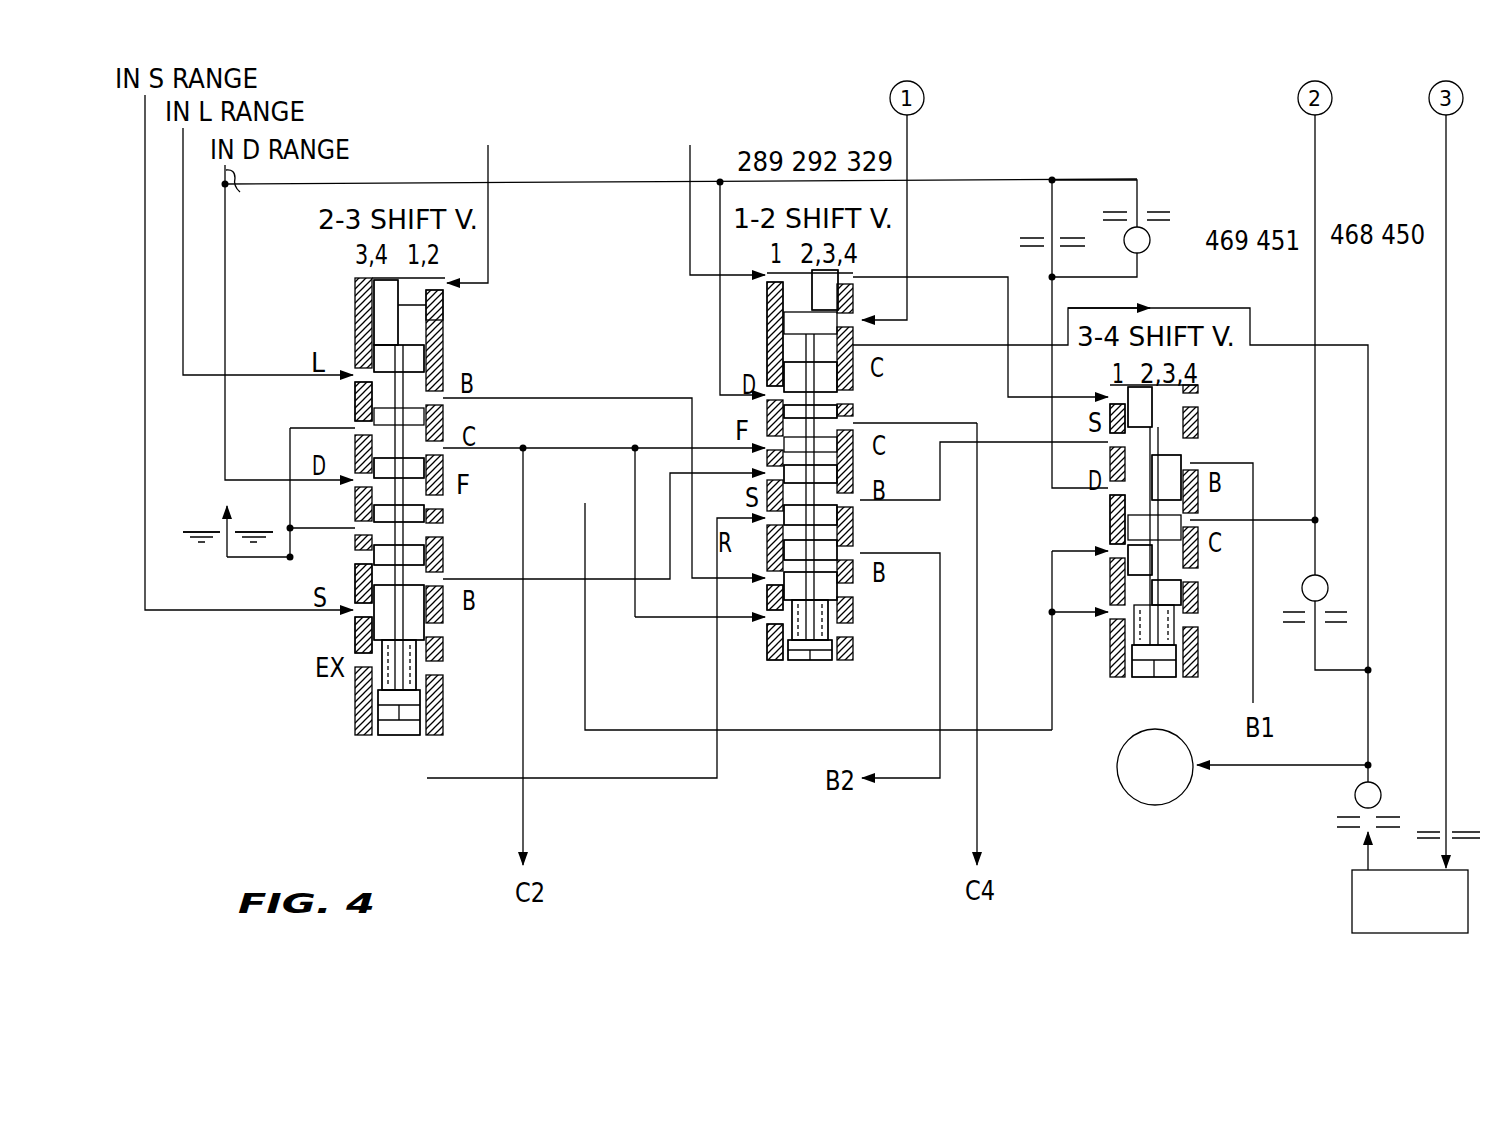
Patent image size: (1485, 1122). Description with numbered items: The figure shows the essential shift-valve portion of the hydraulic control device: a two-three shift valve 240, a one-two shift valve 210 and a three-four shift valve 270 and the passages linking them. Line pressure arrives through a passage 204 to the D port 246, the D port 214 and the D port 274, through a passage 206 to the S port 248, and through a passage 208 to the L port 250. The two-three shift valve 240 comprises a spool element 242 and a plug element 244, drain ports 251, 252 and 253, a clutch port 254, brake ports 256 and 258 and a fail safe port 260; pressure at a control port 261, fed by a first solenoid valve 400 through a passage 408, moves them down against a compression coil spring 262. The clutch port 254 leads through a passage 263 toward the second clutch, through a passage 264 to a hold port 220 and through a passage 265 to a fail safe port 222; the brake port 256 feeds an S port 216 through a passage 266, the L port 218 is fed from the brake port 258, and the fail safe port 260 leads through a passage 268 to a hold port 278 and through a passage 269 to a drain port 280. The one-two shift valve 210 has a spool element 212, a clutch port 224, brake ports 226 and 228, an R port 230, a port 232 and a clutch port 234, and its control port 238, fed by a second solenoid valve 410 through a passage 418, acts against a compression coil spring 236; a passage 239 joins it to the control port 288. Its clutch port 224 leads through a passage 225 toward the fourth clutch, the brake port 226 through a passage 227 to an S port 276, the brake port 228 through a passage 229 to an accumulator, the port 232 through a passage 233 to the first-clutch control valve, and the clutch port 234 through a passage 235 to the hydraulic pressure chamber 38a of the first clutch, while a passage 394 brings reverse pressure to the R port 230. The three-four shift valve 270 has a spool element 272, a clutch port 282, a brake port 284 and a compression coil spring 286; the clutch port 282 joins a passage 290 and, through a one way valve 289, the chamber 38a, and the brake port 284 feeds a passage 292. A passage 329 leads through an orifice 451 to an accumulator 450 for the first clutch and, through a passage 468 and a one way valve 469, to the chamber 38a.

The passage 204 is at (289, 322).
The passage 206 is at (144, 257).
The passage 208 is at (183, 272).
The 1-2 shift valve 210 is at (862, 650).
The spool element 212 is at (855, 397).
The D port 214 is at (773, 370).
The S port 216 is at (762, 478).
The L port 218 is at (753, 600).
The hold port 220 is at (755, 651).
The fail safe port 222 is at (772, 428).
The clutch port 224 is at (866, 442).
The passage 225 is at (980, 802).
The brake port 226 is at (855, 518).
The passage 227 is at (942, 468).
The brake port 228 is at (856, 568).
The passage 229 is at (897, 790).
The R port 230 is at (770, 517).
The port 232 is at (860, 302).
The passage 233 is at (908, 152).
The clutch port 234 is at (858, 350).
The passage 235 is at (1207, 308).
The compression coil spring 236 is at (855, 630).
The control port 238 is at (754, 334).
The passage 239 is at (975, 277).
The 2-3 shift valve 240 is at (352, 715).
The spool element 242 is at (438, 553).
The plug element 244 is at (432, 345).
The D port 246 is at (358, 488).
The S port 248 is at (357, 618).
The L port 250 is at (356, 360).
The drain port 251 is at (356, 565).
The drain port 252 is at (356, 408).
The drain port 253 is at (356, 514).
The clutch port 254 is at (523, 464).
The brake port 256 is at (445, 598).
The brake port 258 is at (445, 412).
The fail safe port 260 is at (438, 530).
The control port 261 is at (442, 303).
The compression coil spring 262 is at (447, 670).
The passage 263 is at (524, 760).
The passage 264 is at (694, 622).
The passage 265 is at (672, 432).
The passage 266 is at (646, 579).
The passage 268 is at (764, 731).
The passage 269 is at (1062, 553).
The 3-4 shift valve 270 is at (1195, 668).
The spool element 272 is at (1170, 425).
The D port 274 is at (1107, 498).
The S port 276 is at (1107, 446).
The hold port 278 is at (1081, 636).
The drain port 280 is at (1080, 574).
The clutch port 282 is at (1186, 568).
The brake port 284 is at (1190, 452).
The compression coil spring 286 is at (1183, 630).
The control port 288 is at (1113, 390).
The one way valve 289 is at (1312, 578).
The passage 290 is at (1315, 378).
The passage 292 is at (1288, 666).
The passage 329 is at (1446, 526).
The hydraulic pressure chamber 38a is at (1147, 806).
The passage 394 is at (612, 780).
The first solenoid valve 400 is at (487, 119).
The passage 408 is at (489, 163).
The second solenoid valve 410 is at (687, 119).
The passage 418 is at (688, 175).
The accumulator 450 is at (1352, 907).
The orifice 451 is at (1426, 830).
The passage 468 is at (1366, 846).
The one way valve 469 is at (1356, 797).